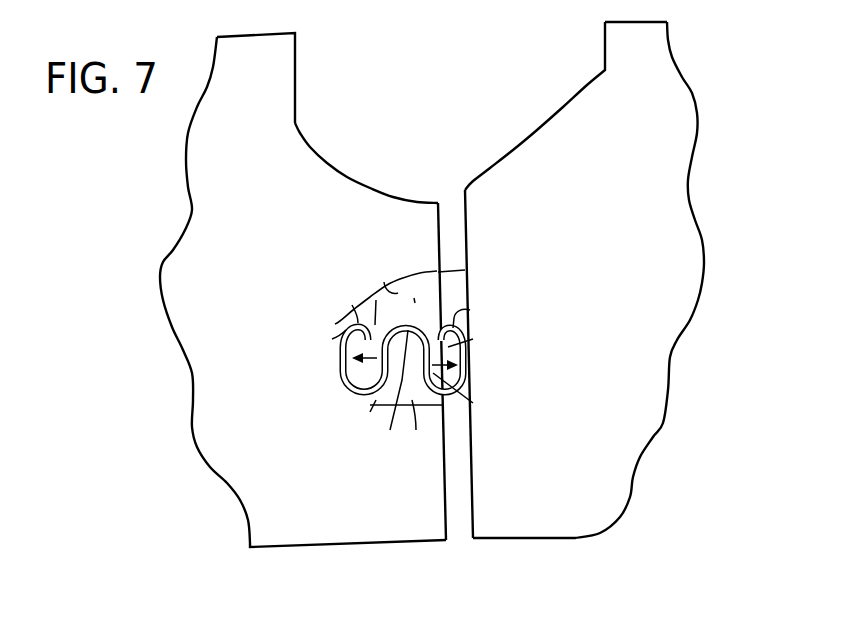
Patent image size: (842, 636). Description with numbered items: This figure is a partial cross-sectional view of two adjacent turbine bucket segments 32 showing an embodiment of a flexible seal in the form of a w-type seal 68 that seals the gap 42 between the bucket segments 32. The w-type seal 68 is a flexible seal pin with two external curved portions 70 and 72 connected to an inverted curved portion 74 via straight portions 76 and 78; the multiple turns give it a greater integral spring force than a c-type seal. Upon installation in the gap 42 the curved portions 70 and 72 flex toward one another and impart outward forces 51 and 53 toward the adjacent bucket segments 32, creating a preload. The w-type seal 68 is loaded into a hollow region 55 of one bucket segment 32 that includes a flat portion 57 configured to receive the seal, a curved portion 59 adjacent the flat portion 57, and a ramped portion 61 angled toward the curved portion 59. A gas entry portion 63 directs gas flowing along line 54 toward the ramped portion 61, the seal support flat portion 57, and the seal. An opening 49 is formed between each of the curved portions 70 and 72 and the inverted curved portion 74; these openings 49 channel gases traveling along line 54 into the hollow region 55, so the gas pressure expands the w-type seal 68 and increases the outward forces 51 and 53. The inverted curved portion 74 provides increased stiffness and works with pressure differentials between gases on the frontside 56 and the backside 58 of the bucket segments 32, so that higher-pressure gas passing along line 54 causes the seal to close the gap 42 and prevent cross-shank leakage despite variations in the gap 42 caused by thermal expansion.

The bucket segments 32 is at (163, 258).
The gap 42 is at (470, 209).
The opening 49 is at (376, 300).
The outward force 51 is at (342, 378).
The outward force 53 is at (455, 375).
The line 54 is at (451, 168).
The hollow region 55 is at (390, 430).
The frontside 56 is at (383, 115).
The flat portion 57 is at (416, 430).
The backside 58 is at (470, 597).
The curved portion 59 is at (332, 339).
The ramped portion 61 is at (384, 282).
The gas entry portion 63 is at (465, 270).
The w-type seal 68 is at (416, 310).
The curved portion 70 is at (352, 305).
The curved portion 72 is at (470, 310).
The inverted curved portion 74 is at (370, 412).
The straight portion 76 is at (335, 324).
The straight portion 78 is at (473, 403).